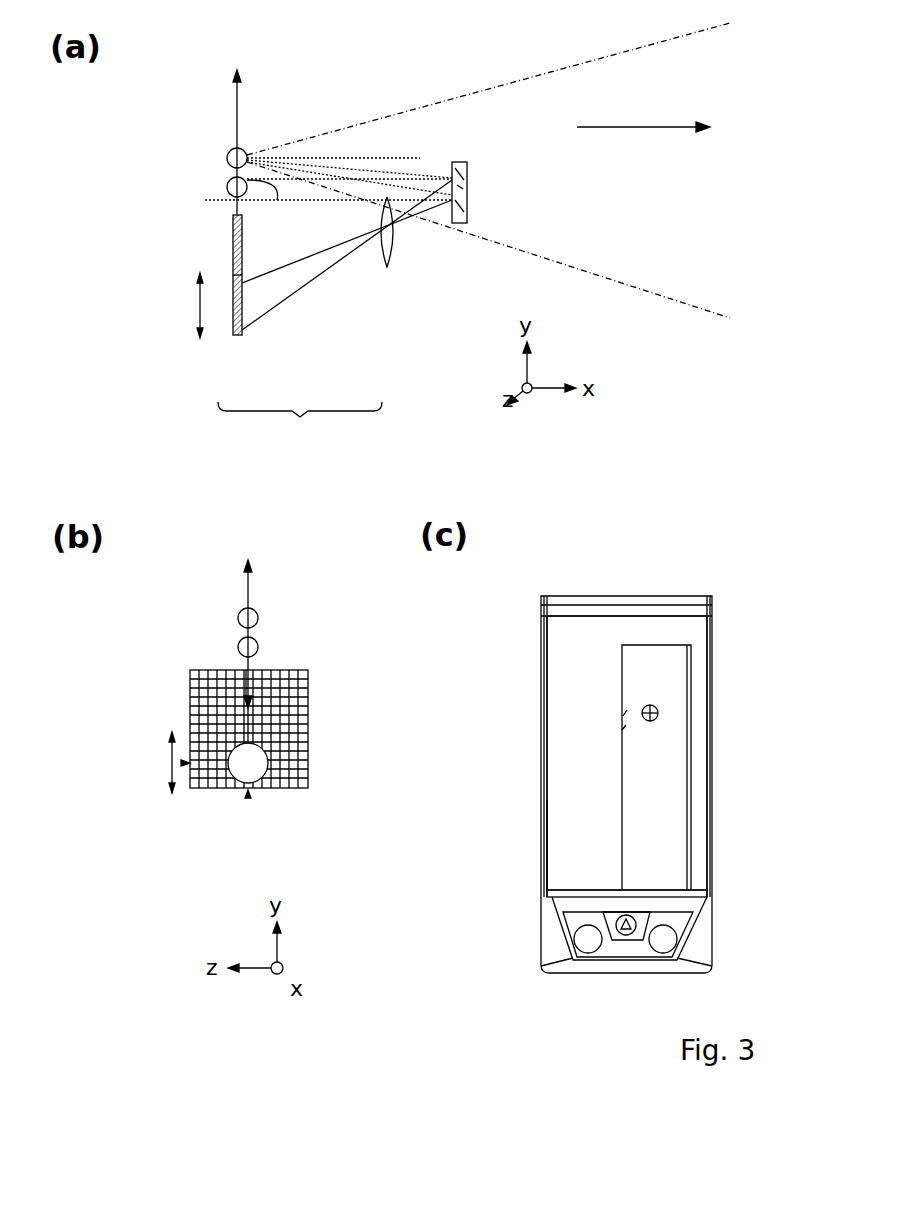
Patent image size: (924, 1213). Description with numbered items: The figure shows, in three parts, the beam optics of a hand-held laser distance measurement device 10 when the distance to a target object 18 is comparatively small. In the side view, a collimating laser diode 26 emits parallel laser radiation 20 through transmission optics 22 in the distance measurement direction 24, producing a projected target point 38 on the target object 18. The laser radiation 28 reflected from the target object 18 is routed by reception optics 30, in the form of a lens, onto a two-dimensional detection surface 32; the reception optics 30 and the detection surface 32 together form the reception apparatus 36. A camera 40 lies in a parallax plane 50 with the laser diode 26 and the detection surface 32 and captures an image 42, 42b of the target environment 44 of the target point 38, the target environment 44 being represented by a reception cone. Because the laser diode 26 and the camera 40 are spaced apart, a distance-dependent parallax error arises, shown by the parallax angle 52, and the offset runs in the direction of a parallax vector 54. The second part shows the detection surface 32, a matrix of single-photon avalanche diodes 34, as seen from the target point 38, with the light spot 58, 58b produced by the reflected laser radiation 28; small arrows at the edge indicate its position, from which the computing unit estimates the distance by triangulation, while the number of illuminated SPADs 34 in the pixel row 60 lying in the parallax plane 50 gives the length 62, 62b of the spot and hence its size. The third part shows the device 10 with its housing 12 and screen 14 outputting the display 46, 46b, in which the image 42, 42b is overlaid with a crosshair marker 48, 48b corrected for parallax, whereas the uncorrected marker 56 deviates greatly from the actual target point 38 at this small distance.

In FIG. 3a, the laser distance measurement device 10 is at (386, 75).
In FIG. 3c, the laser distance measurement device 10 is at (698, 585).
In FIG. 3c, the housing 12 is at (550, 955).
In FIG. 3c, the screen 14 is at (706, 672).
In FIG. 3a, the target object 18 is at (456, 162).
In FIG. 3c, the target object 18 is at (632, 776).
In FIG. 3a, the laser radiation 20 is at (205, 200).
In FIG. 3a, the transmission optics 22 is at (197, 178).
In FIG. 3b, the transmission optics 22 is at (192, 633).
In FIG. 3a, the laser diode 26 is at (228, 183).
In FIG. 3b, the laser diode 26 is at (238, 643).
In FIG. 3a, the distance measurement direction 24 is at (690, 126).
In FIG. 3a, the reflected laser radiation 28 is at (318, 258).
In FIG. 3a, the reception optics 30 is at (388, 268).
In FIG. 3a, the detection surface 32 is at (237, 338).
In FIG. 3b, the detection surface 32 is at (296, 800).
In FIG. 3b, the single-photon avalanche diode 34 is at (215, 786).
In FIG. 3a, the reception apparatus 36 is at (300, 425).
In FIG. 3a, the target point 38 is at (465, 188).
In FIG. 3c, the target point 38 is at (660, 712).
In FIG. 3a, the camera 40 is at (228, 151).
In FIG. 3b, the camera 40 is at (238, 613).
In FIG. 3c, the image 42 is at (501, 834).
In FIG. 3c, the image 42b is at (501, 834).
In FIG. 3a, the target environment 44 is at (706, 300).
In FIG. 3c, the target environment 44 is at (550, 716).
In FIG. 3c, the display 46 is at (501, 834).
In FIG. 3c, the display 46b is at (560, 848).
In FIG. 3c, the marker 48 is at (550, 672).
In FIG. 3c, the marker 48b is at (652, 698).
In FIG. 3a, the parallax plane 50 is at (338, 84).
In FIG. 3a, the parallax angle 52 is at (330, 162).
In FIG. 3a, the parallax vector 54 is at (235, 114).
In FIG. 3b, the parallax vector 54 is at (252, 590).
In FIG. 3c, the uncorrected marker 56 is at (628, 726).
In FIG. 3a, the light spot 58 is at (179, 265).
In FIG. 3b, the light spot 58 is at (316, 748).
In FIG. 3a, the light spot 58b is at (235, 290).
In FIG. 3b, the light spot 58b is at (250, 766).
In FIG. 3b, the pixel row 60 is at (252, 670).
In FIG. 3a, the length 62 is at (144, 305).
In FIG. 3b, the length 62 is at (122, 762).
In FIG. 3a, the length 62b is at (198, 305).
In FIG. 3b, the length 62b is at (171, 755).